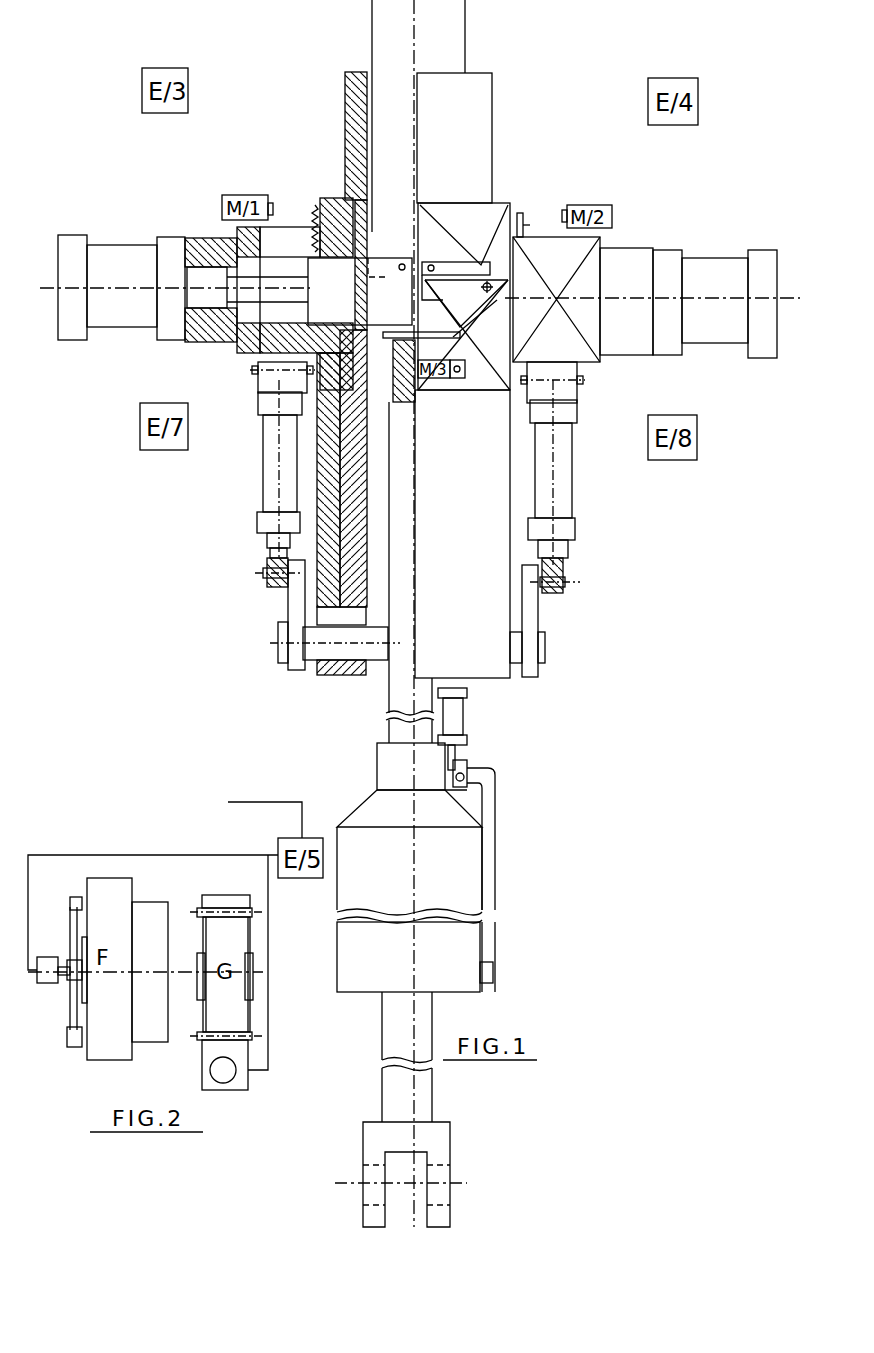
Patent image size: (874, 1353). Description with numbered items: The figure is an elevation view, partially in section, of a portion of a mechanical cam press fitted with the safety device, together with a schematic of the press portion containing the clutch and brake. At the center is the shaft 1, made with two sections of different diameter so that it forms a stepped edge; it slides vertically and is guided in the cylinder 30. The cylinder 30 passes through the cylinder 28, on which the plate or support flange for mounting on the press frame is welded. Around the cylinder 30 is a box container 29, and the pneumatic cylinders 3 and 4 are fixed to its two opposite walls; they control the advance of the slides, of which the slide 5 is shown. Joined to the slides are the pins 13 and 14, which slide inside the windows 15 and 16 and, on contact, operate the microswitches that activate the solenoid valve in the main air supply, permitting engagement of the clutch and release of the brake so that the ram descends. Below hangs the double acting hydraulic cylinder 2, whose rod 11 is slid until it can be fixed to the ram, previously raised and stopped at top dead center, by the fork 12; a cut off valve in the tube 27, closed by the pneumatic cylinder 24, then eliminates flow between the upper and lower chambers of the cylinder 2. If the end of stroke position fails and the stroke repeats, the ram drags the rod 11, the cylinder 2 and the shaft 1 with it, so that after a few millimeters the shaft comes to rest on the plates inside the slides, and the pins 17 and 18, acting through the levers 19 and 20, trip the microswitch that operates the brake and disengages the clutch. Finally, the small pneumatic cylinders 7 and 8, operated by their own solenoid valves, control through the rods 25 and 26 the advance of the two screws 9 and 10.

The shaft 1 is at (406, 140).
The double acting hydraulic cylinder 2 is at (396, 866).
The pneumatic cylinder 3 is at (137, 281).
The pneumatic cylinder 4 is at (734, 298).
The slide 5 is at (346, 305).
The pneumatic cylinder 7 is at (282, 461).
The pneumatic cylinder 8 is at (552, 463).
The screw 9 is at (358, 643).
The screw 10 is at (550, 647).
The rod 11 is at (415, 1043).
The fork 12 is at (422, 1141).
The pin 13 is at (313, 204).
The pin 14 is at (519, 211).
The window 15 is at (303, 252).
The window 16 is at (562, 231).
The pin 17 is at (400, 271).
The pin 18 is at (434, 267).
The lever 19 is at (390, 338).
The lever 20 is at (462, 317).
The pneumatic cylinder 24 is at (453, 722).
The rod 25 is at (296, 602).
The rod 26 is at (530, 612).
The tube 27 is at (490, 840).
The cylinder 28 is at (474, 461).
The box container 29 is at (355, 242).
The cylinder 30 is at (474, 147).